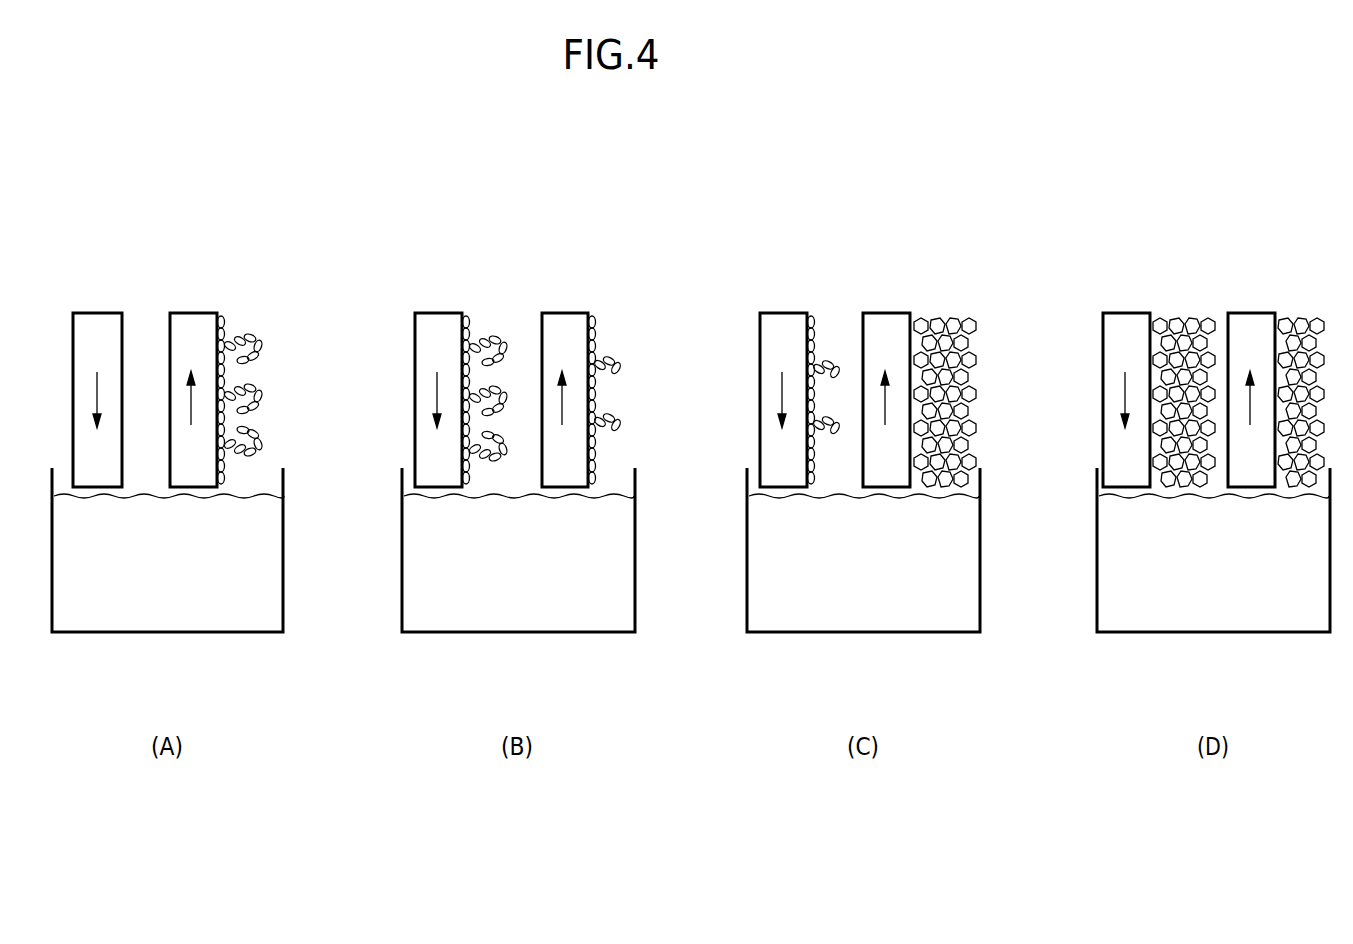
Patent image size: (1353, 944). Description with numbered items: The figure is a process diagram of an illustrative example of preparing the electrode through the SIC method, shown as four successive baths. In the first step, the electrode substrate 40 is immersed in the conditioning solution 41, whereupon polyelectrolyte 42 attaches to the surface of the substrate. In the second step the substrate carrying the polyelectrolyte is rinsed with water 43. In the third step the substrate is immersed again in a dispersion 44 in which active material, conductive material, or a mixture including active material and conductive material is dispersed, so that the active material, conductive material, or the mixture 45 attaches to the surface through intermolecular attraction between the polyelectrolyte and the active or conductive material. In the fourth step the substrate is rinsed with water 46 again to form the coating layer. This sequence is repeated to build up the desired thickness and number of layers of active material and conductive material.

The electrode substrate 40 is at (98, 320).
The conditioning solution 41 is at (249, 618).
The polyelectrolyte 42 is at (228, 318).
The water 43 is at (598, 618).
The dispersion 44 is at (946, 618).
The mixture of active material and conductive material 45 is at (935, 318).
The water 46 is at (1295, 618).